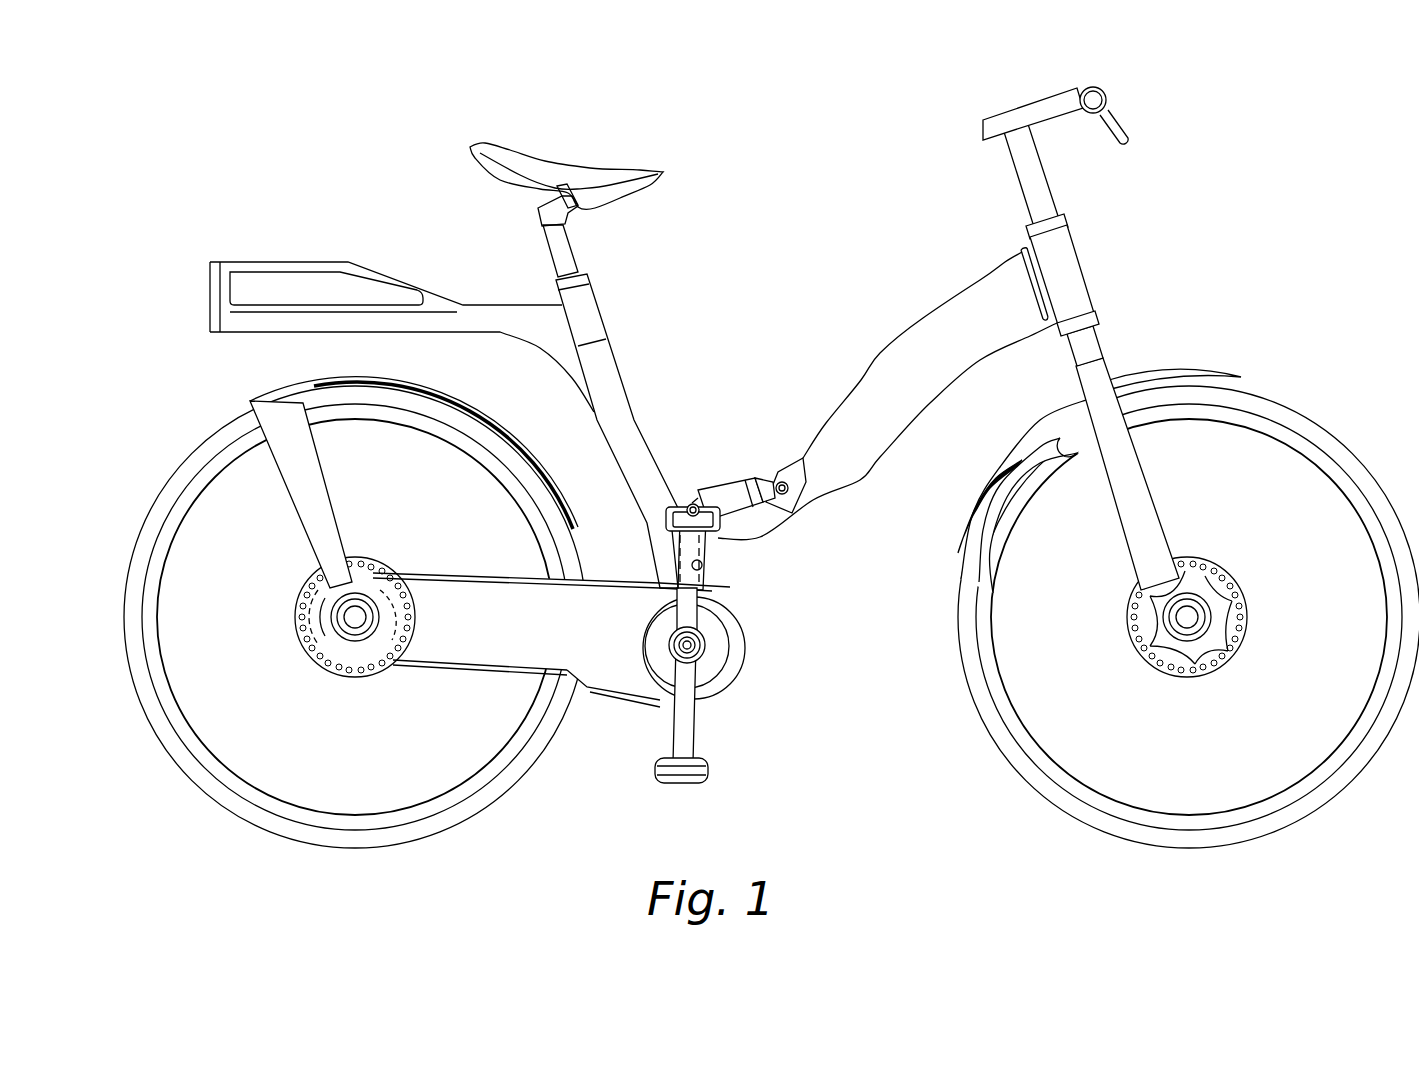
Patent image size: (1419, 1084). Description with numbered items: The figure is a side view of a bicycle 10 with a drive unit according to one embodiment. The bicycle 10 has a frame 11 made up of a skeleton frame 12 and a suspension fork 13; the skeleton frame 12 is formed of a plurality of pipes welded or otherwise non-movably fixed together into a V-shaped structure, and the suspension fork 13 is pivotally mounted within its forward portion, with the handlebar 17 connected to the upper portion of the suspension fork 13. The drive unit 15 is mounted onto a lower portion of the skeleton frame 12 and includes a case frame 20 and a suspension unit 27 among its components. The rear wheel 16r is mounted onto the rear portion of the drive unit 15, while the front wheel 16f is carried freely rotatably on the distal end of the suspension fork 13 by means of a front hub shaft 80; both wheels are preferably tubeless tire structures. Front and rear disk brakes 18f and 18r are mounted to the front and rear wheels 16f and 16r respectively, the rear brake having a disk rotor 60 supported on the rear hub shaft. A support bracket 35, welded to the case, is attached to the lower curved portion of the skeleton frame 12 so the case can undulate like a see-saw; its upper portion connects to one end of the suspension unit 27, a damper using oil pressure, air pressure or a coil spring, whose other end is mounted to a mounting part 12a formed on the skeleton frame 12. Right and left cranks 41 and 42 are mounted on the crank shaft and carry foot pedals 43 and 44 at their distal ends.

The bicycle 10 is at (763, 264).
The bicycle frame 11 is at (845, 351).
The skeleton frame 12 is at (924, 351).
The mounting part 12a is at (786, 469).
The suspension fork 13 is at (1103, 383).
The drive unit 15 is at (595, 718).
The rear wheel 16r is at (238, 436).
The front wheel 16f is at (973, 697).
The handlebar 17 is at (1027, 183).
The rear disk brake 18r is at (279, 569).
The front disk brake 18f is at (1245, 554).
The case frame 20 is at (487, 622).
The suspension unit 27 is at (738, 487).
The support bracket 35 is at (710, 527).
The right crank 41 is at (723, 587).
The left crank 42 is at (690, 727).
The foot pedal 43 is at (665, 509).
The foot pedal 44 is at (710, 780).
The disk rotor 60 is at (372, 562).
The front hub shaft 80 is at (1250, 590).